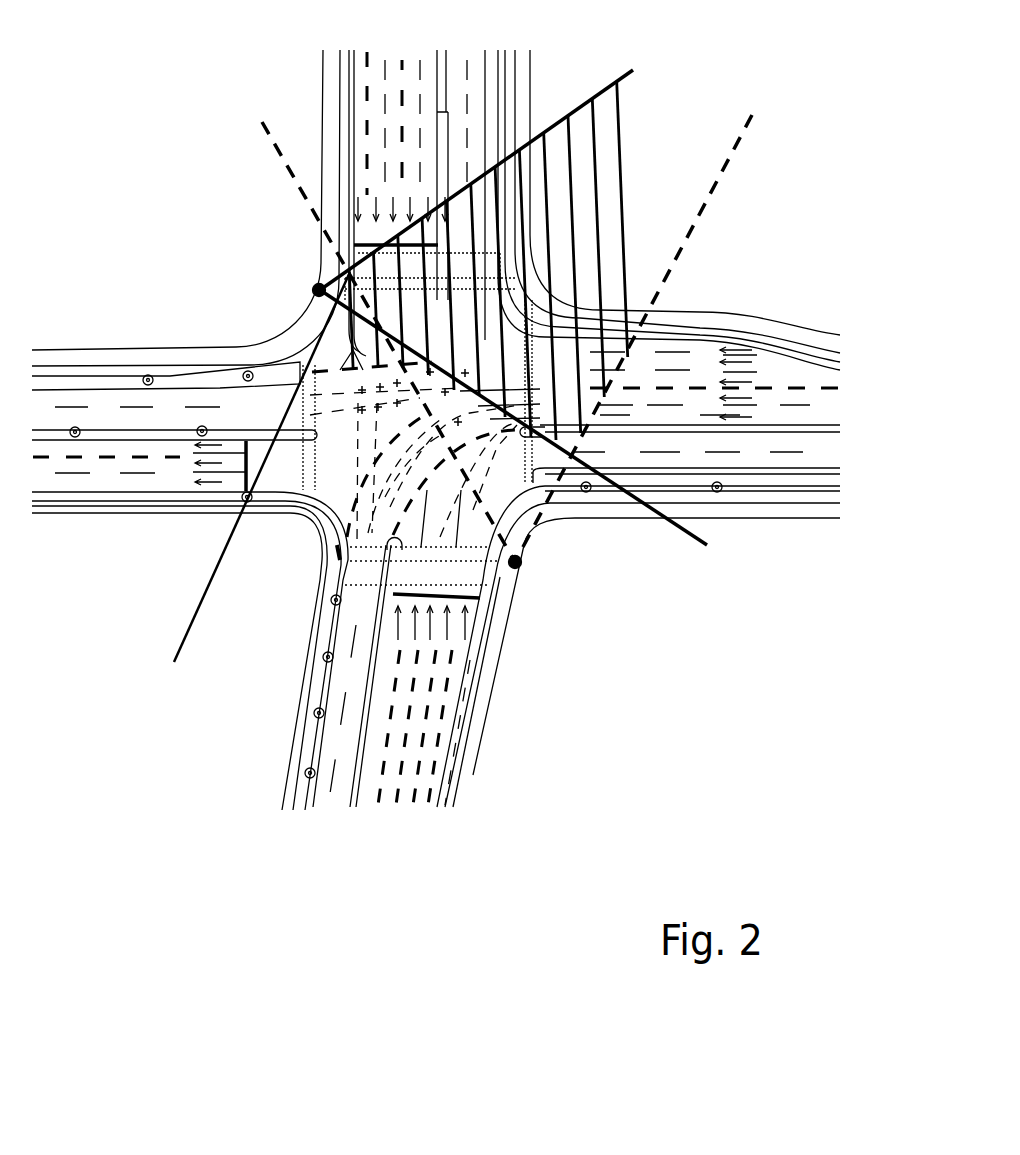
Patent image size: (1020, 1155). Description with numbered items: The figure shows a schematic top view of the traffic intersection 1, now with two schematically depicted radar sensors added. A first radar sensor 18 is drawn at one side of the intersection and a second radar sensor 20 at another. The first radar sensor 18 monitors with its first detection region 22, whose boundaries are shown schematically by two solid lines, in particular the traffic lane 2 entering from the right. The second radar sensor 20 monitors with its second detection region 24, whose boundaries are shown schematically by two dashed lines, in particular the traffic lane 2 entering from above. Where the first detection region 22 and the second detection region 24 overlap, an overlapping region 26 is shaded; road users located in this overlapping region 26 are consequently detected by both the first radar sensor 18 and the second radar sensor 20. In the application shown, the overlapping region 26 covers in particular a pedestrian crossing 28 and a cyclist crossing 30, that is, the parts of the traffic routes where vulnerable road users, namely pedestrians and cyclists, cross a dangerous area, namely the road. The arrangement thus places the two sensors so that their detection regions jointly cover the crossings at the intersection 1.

The intersection 1 is at (645, 108).
The traffic lane 2 is at (541, 80).
The first radar sensor 18 is at (319, 290).
The second radar sensor 20 is at (520, 565).
The first detection region 22 is at (255, 486).
The second detection region 24 is at (303, 192).
The overlapping region 26 is at (547, 363).
The pedestrian crossing 28 is at (583, 347).
The cyclist crossing 30 is at (532, 453).